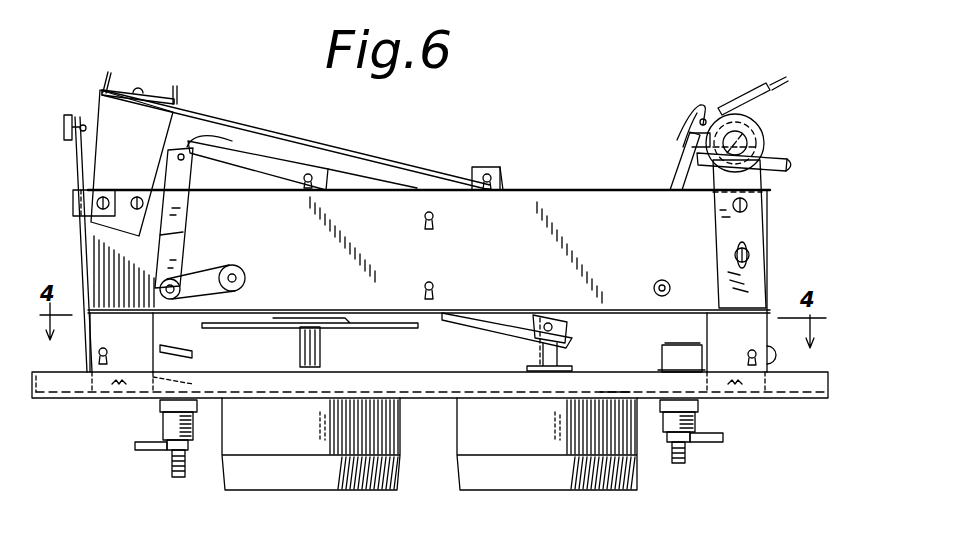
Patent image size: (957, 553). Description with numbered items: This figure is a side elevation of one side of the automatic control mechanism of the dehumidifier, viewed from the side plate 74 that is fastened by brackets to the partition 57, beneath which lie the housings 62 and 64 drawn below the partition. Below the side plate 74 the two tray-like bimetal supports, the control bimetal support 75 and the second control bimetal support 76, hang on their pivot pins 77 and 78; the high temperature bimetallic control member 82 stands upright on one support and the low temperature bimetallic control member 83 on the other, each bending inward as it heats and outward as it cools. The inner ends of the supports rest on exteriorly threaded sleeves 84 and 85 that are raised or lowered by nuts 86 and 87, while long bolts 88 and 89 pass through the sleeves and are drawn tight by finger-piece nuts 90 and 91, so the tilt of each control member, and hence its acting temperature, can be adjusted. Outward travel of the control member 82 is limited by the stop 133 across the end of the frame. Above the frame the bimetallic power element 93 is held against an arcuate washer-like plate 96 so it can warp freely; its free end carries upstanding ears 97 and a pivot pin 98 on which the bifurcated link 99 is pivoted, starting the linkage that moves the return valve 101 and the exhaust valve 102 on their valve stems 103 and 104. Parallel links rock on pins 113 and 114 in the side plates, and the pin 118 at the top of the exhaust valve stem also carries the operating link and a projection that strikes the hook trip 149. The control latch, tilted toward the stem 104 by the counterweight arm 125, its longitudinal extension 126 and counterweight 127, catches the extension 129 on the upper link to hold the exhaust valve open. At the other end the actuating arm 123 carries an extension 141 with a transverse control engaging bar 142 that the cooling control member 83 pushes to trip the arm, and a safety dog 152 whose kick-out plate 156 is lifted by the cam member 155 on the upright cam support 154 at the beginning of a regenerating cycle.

The partition 57 is at (830, 392).
The housing 62 is at (599, 489).
The housing 64 is at (289, 491).
The side plate 74 is at (445, 315).
The control bimetal support 75 is at (160, 348).
The second control bimetal support 76 is at (699, 346).
The pivot pin 77 is at (131, 340).
The pivot pin 78 is at (752, 358).
The high temperature bimetallic control member 82 is at (80, 243).
The low temperature bimetallic control member 83 is at (773, 362).
The exteriorly threaded sleeve 84 is at (163, 426).
The exteriorly threaded sleeve 85 is at (697, 426).
The nut 86 is at (160, 407).
The nut 87 is at (700, 407).
The long bolt 88 is at (170, 471).
The long bolt 89 is at (682, 467).
The nut 90 is at (135, 446).
The nut 91 is at (715, 445).
The bimetallic power element 93 is at (293, 136).
The arcuate washer-like plate 96 is at (103, 72).
The upstanding ears 97 is at (476, 167).
The pivot pin 98 is at (470, 177).
The bifurcated link 99 is at (503, 182).
The return valve 101 is at (626, 373).
The exhaust valve 102 is at (358, 330).
The valve stem 103 is at (558, 357).
The valve stem 104 is at (298, 350).
The pin 113 is at (442, 288).
The pin 114 is at (442, 219).
The pin 118 is at (313, 181).
The actuating arm 123 is at (684, 182).
The counterweight arm 125 is at (200, 239).
The longitudinal extension 126 is at (208, 269).
The counterweight 127 is at (245, 272).
The extension 129 is at (232, 146).
The stop 133 is at (80, 203).
The extension 141 is at (775, 155).
The control engaging bar 142 is at (792, 166).
The hook trip 149 is at (200, 183).
The safety dog 152 is at (779, 78).
The upright cam support 154 is at (750, 227).
The cam member 155 is at (770, 128).
The kick-out plate 156 is at (739, 98).